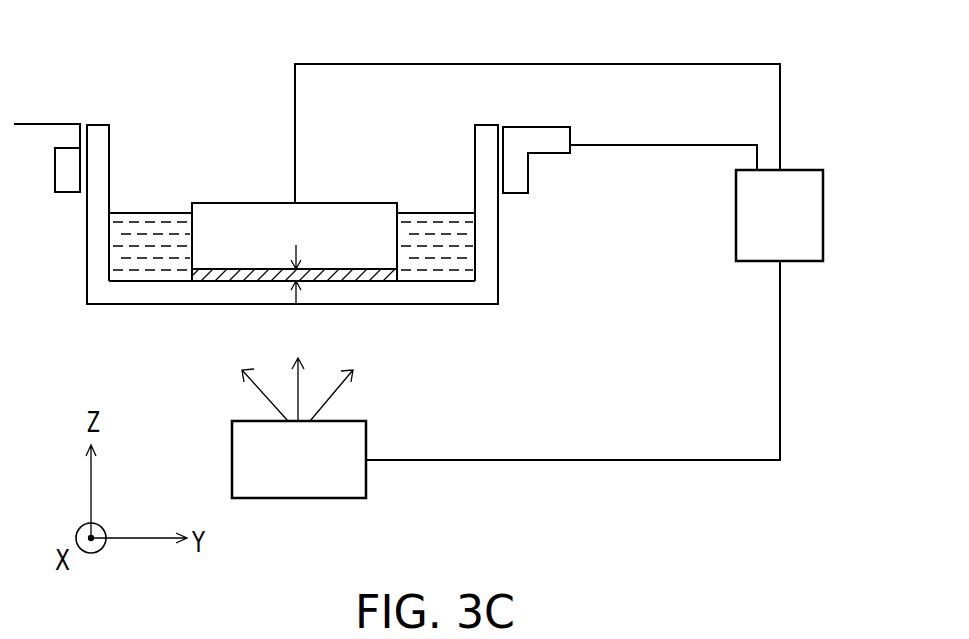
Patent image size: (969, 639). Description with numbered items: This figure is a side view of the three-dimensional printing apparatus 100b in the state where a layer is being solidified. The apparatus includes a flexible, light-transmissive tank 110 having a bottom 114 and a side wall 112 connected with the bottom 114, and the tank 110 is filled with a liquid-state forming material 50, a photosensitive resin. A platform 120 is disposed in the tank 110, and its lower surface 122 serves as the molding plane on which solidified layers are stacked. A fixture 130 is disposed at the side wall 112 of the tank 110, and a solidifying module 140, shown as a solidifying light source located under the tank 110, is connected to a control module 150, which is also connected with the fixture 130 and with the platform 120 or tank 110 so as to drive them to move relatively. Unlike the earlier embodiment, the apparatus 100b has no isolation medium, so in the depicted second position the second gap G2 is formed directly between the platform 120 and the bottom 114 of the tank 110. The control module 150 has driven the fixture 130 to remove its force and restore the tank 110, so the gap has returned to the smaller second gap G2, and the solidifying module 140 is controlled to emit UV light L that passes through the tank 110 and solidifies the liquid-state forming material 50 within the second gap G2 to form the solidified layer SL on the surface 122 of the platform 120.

The 3-D printing apparatus 100b is at (425, 282).
The tank 110 is at (309, 182).
The side wall 112 is at (540, 246).
The bottom 114 is at (315, 198).
The platform 120 is at (230, 215).
The surface 122 is at (362, 272).
The fixture 130 is at (572, 137).
The solidifying module 140 is at (297, 498).
The control module 150 is at (800, 261).
The liquid-state forming material 50 is at (125, 262).
The solidified layer SL is at (270, 275).
The second gap G2 is at (302, 274).
The UV light L is at (342, 388).